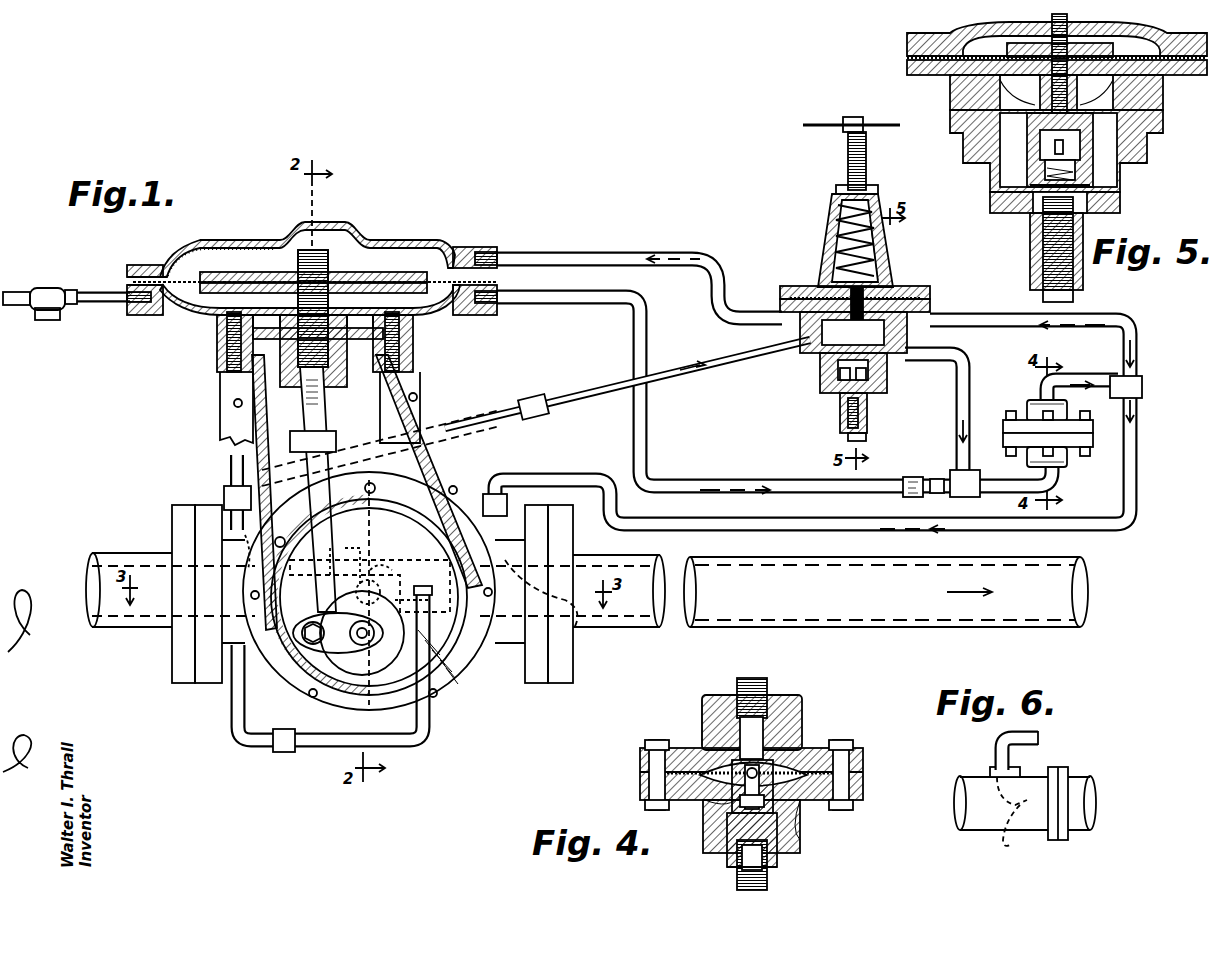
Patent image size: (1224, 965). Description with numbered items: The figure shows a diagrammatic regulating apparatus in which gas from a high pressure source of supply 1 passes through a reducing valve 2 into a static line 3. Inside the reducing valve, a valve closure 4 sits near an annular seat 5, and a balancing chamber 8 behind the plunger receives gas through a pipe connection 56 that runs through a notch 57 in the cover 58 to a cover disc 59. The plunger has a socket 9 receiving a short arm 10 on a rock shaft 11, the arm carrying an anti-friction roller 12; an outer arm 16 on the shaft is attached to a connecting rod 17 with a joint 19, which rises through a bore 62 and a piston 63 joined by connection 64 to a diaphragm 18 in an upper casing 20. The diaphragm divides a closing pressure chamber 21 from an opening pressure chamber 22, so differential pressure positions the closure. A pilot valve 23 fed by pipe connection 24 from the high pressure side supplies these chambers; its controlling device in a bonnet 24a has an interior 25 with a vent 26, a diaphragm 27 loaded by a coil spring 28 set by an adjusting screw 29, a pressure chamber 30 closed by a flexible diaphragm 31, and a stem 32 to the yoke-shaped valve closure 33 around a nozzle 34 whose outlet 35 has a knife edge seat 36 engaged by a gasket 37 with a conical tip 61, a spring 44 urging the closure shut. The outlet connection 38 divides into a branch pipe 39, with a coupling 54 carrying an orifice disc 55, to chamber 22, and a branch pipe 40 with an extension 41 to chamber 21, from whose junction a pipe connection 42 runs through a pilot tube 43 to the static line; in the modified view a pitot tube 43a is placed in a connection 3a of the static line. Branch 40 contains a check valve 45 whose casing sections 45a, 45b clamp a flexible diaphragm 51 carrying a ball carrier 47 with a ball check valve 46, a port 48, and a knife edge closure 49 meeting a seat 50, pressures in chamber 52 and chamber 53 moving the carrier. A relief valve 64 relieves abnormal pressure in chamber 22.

In FIG. 1, the source of supply 1 is at (120, 557).
In FIG. 1, the reducing valve 2 is at (437, 637).
In FIG. 1, the static line 3 is at (822, 582).
In FIG. 6, the connection 3a is at (972, 785).
In FIG. 1, the valve closure 4 is at (250, 600).
In FIG. 1, the annular seat 5 is at (258, 578).
In FIG. 1, the balancing chamber 8 is at (428, 570).
In FIG. 1, the socket 9 is at (380, 568).
In FIG. 1, the short arm 10 is at (372, 587).
In FIG. 1, the rock shaft 11 is at (366, 640).
In FIG. 1, the anti-friction roller 12 is at (355, 562).
In FIG. 1, the arm 16 is at (325, 650).
In FIG. 1, the connecting rod 17 is at (325, 393).
In FIG. 1, the diaphragm 18 is at (386, 268).
In FIG. 1, the joint 19 is at (322, 420).
In FIG. 1, the upper casing 20 is at (457, 241).
In FIG. 1, the closing pressure chamber 21 is at (252, 250).
In FIG. 1, the opening pressure chamber 22 is at (212, 305).
In FIG. 1, the pilot valve 23 is at (809, 374).
In FIG. 1, the pipe connection 24 is at (592, 388).
In FIG. 1, the bonnet 24a is at (880, 275).
In FIG. 5, the bonnet 24a is at (925, 46).
In FIG. 1, the interior of the bonnet 25 is at (892, 292).
In FIG. 5, the interior of the bonnet 25 is at (1110, 42).
In FIG. 1, the vent 26 is at (888, 290).
In FIG. 5, the vent 26 is at (1080, 52).
In FIG. 1, the diaphragm 27 is at (818, 285).
In FIG. 5, the diaphragm 27 is at (960, 88).
In FIG. 1, the coil spring 28 is at (845, 240).
In FIG. 5, the coil spring 28 is at (1047, 30).
In FIG. 1, the adjusting screw 29 is at (868, 148).
In FIG. 1, the pressure chamber 30 is at (790, 318).
In FIG. 5, the pressure chamber 30 is at (1056, 91).
In FIG. 1, the flexible diaphragm 31 is at (885, 370).
In FIG. 5, the flexible diaphragm 31 is at (995, 140).
In FIG. 1, the stem 32 is at (925, 303).
In FIG. 5, the stem 32 is at (1082, 97).
In FIG. 5, the valve closure 33 is at (1118, 177).
In FIG. 5, the nozzle 34 is at (1080, 143).
In FIG. 1, the outlet 35 is at (832, 375).
In FIG. 5, the outlet 35 is at (1050, 163).
In FIG. 5, the knife edge seat 36 is at (1080, 156).
In FIG. 1, the gasket 37 is at (878, 383).
In FIG. 5, the gasket 37 is at (1040, 184).
In FIG. 1, the outlet connection 38 is at (955, 354).
In FIG. 1, the branch pipe 39 is at (885, 480).
In FIG. 1, the branch pipe 40 is at (1070, 384).
In FIG. 4, the branch pipe 40 is at (760, 686).
In FIG. 1, the extension 41 is at (1132, 295).
In FIG. 1, the pipe connection 42 is at (1137, 483).
In FIG. 1, the pilot tube 43 is at (570, 630).
In FIG. 6, the pitot tube 43a is at (1018, 816).
In FIG. 1, the spring 44 is at (842, 412).
In FIG. 5, the spring 44 is at (1036, 262).
In FIG. 1, the check valve 45 is at (1030, 408).
In FIG. 4, the check valve 45 is at (696, 716).
In FIG. 1, the casing section 45a is at (1030, 455).
In FIG. 1, the upper section 45b is at (1063, 406).
In FIG. 4, the upper section 45b is at (795, 708).
In FIG. 4, the ball check valve 46 is at (758, 766).
In FIG. 4, the ball carrier 47 is at (730, 792).
In FIG. 4, the port 48 is at (802, 815).
In FIG. 4, the knife edge closure 49 is at (738, 805).
In FIG. 4, the seat 50 is at (800, 840).
In FIG. 4, the flexible diaphragm 51 is at (705, 772).
In FIG. 4, the chamber 52 is at (862, 782).
In FIG. 4, the chamber 53 is at (792, 772).
In FIG. 1, the coupling 54 is at (915, 477).
In FIG. 1, the orifice disc 55 is at (904, 492).
In FIG. 1, the pipe connection 56 is at (315, 745).
In FIG. 1, the notch 57 is at (393, 700).
In FIG. 1, the cover 58 is at (445, 640).
In FIG. 1, the cover disc 59 is at (388, 558).
In FIG. 5, the conical tip 61 is at (1045, 172).
In FIG. 1, the bore 62 is at (280, 356).
In FIG. 1, the piston 63 is at (292, 365).
In FIG. 1, the relief valve 64 is at (36, 306).